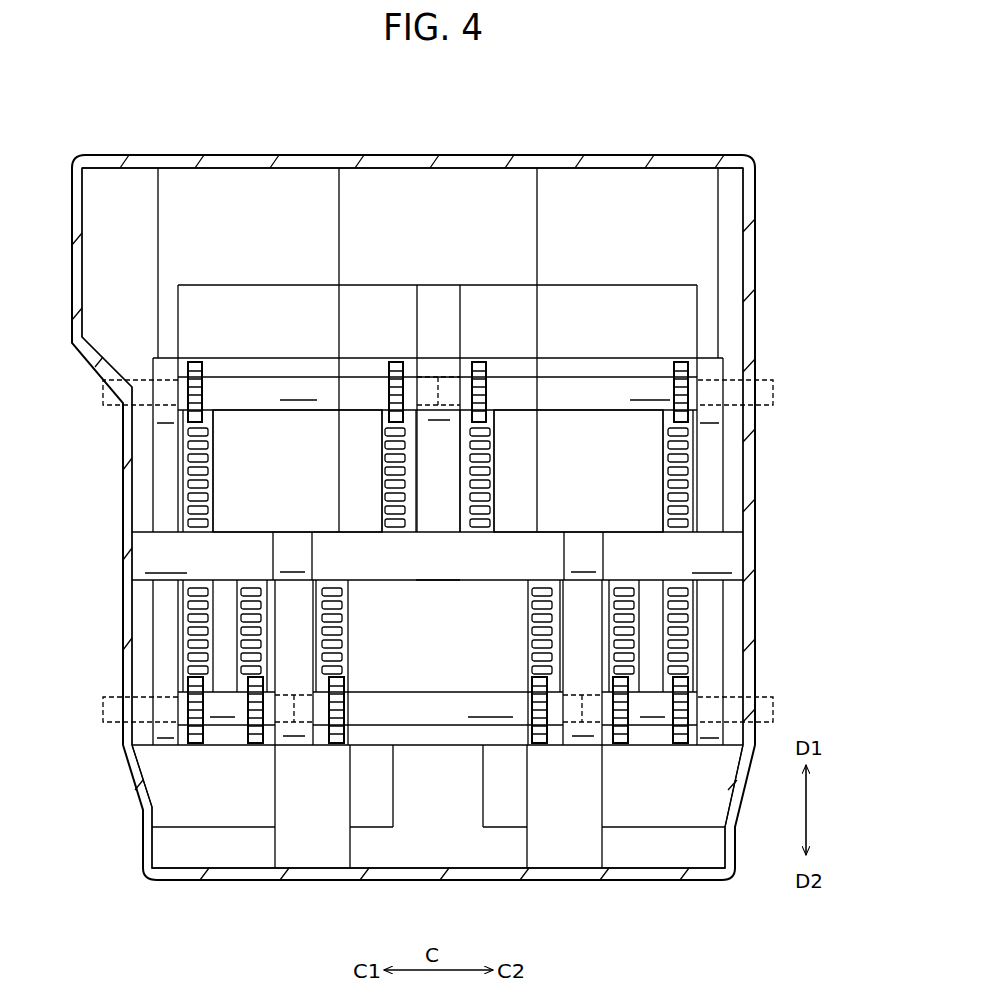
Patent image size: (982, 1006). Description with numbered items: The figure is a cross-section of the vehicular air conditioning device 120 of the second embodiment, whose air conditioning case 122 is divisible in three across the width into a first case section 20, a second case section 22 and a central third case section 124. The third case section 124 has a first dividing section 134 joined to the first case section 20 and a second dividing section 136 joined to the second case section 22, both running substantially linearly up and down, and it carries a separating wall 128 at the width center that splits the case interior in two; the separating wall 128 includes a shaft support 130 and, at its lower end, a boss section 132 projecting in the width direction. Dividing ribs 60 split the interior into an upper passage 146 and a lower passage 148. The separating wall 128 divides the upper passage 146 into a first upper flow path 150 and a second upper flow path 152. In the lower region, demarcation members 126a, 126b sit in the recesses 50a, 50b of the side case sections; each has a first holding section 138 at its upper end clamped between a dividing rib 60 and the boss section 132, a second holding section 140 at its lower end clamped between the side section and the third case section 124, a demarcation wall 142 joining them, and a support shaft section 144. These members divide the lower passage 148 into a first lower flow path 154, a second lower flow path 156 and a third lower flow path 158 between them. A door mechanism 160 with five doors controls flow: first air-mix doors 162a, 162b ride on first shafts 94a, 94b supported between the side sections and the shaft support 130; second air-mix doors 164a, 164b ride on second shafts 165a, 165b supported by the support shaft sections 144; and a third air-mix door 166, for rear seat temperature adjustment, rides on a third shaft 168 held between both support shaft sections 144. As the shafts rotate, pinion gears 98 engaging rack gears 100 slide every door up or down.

The vehicular air conditioning device 120 is at (513, 82).
The third case section 124 is at (412, 152).
The first case section 20 is at (226, 152).
The second case section 22 is at (620, 152).
The air conditioning case 122 is at (128, 832).
The first dividing section 134 is at (337, 218).
The second dividing section 136 is at (540, 218).
The shaft support 130 is at (438, 340).
The separating wall 128 is at (440, 505).
The door mechanism 160 is at (163, 503).
The second upper flow path 152 is at (583, 405).
The first upper flow path 150 is at (290, 405).
The upper passage 146 is at (230, 455).
The first air-mix door 162a is at (378, 428).
The first air-mix door 162b is at (518, 428).
The first shaft 94a is at (297, 471).
The first shaft 94b is at (578, 471).
The pinion gear 98 is at (196, 360).
The rack gear 100 is at (210, 482).
The dividing rib 60 is at (160, 555).
The first holding section 138 is at (293, 547).
The third air-mix door 166 is at (465, 600).
The boss section 132 is at (391, 573).
The third shaft 168 is at (447, 702).
The lower passage 148 is at (225, 640).
The first lower flow path 154 is at (228, 618).
The second air-mix door 164a is at (225, 655).
The second lower flow path 156 is at (662, 613).
The second air-mix door 164b is at (655, 652).
The demarcation wall 142 is at (303, 642).
The second shaft 165a is at (232, 728).
The second shaft 165b is at (645, 728).
The support shaft section 144 is at (302, 740).
The second holding section 140 is at (345, 848).
The third lower flow path 158 is at (413, 682).
The recess 50a is at (273, 857).
The recess 50b is at (602, 857).
The demarcation member 126a is at (268, 850).
The demarcation member 126b is at (607, 850).